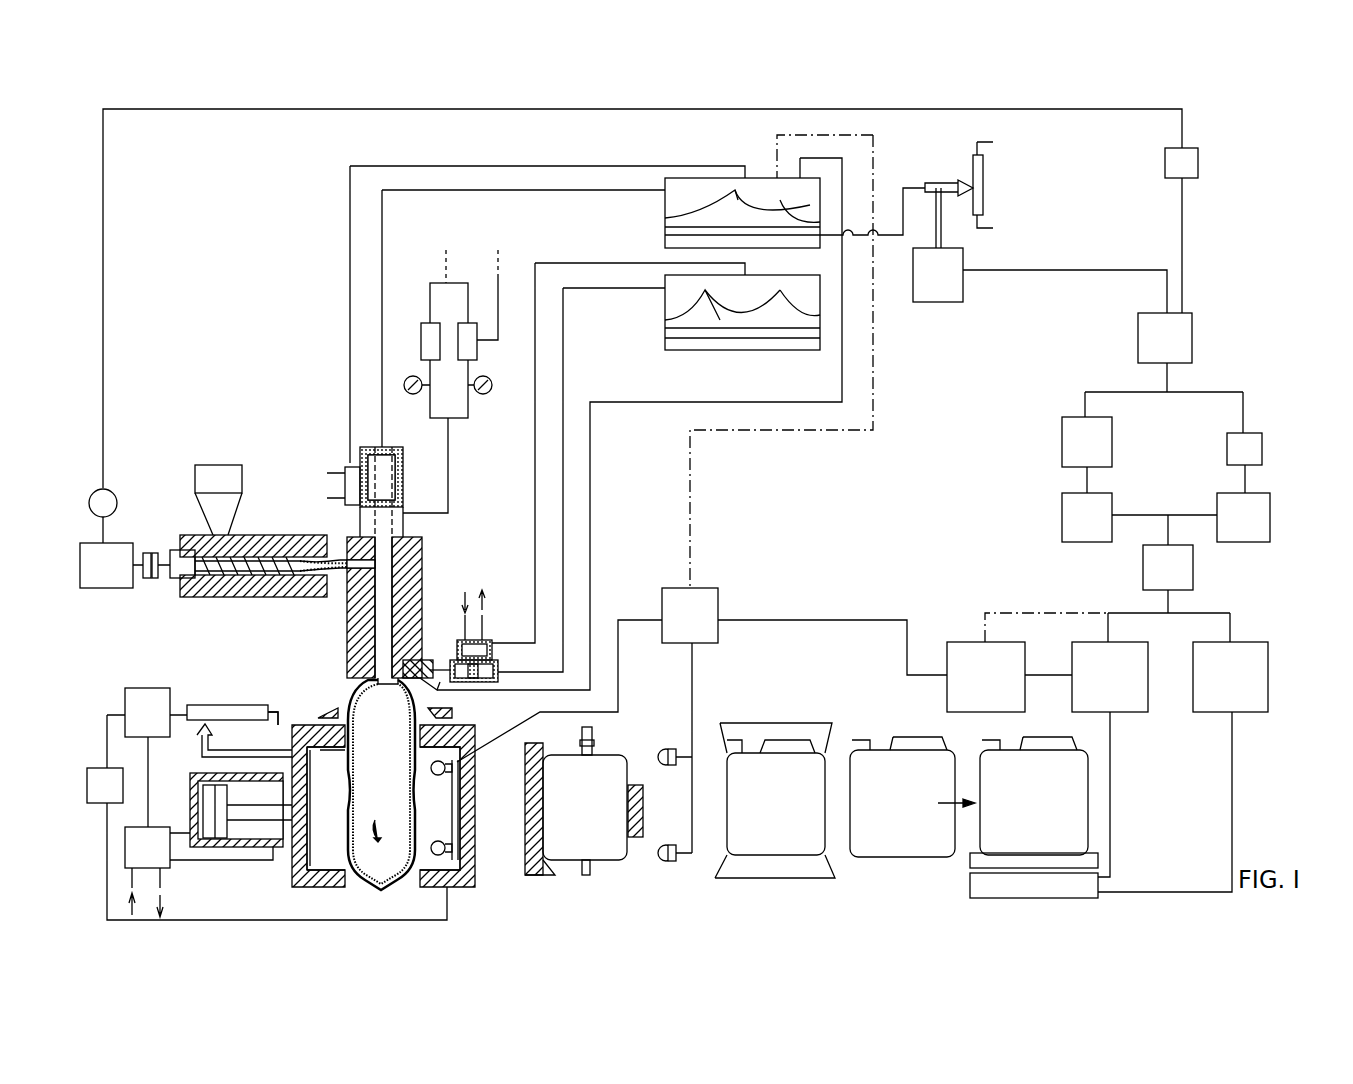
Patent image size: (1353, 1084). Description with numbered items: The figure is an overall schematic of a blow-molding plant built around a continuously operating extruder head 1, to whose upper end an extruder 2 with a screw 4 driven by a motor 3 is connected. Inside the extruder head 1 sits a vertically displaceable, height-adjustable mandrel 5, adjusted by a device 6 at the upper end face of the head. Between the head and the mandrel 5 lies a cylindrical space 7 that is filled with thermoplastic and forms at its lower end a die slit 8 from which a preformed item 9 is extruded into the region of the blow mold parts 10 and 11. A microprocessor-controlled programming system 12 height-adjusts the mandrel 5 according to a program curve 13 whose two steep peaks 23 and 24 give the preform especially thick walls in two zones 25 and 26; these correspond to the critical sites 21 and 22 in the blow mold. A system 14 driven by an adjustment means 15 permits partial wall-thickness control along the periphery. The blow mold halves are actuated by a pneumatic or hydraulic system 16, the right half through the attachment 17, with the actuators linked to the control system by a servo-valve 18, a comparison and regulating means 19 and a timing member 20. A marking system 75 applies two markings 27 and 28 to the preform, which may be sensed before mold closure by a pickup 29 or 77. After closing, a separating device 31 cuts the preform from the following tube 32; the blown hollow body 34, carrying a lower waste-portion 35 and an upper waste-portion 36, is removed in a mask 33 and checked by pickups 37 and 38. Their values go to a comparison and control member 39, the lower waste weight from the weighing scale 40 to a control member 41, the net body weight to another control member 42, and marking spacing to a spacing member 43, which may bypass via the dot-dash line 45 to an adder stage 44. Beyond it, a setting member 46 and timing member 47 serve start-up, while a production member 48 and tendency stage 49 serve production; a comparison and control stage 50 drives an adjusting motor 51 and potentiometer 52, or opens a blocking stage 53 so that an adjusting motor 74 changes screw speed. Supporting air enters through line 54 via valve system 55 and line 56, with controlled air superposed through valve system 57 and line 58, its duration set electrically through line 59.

The extruder head 1 is at (428, 551).
The extruder 2 is at (222, 598).
The motor 3 is at (92, 588).
The screw 4 is at (242, 530).
The mandrel 5 is at (385, 690).
The device 6 is at (403, 490).
The cylindrical space 7 is at (360, 618).
The die slit 8 is at (365, 668).
The preformed item 9 is at (358, 750).
The blow mold part 10 is at (325, 887).
The blow mold part 11 is at (462, 887).
The programming system 12 is at (665, 200).
The program curve 13 is at (745, 215).
The system 14 is at (425, 630).
The adjustment means 15 is at (492, 650).
The pneumatic or hydraulic system 16 is at (235, 847).
The attachment 17 is at (475, 800).
The servo-valve 18 is at (158, 827).
The comparison and regulating means 19 is at (142, 688).
The timing member 20 is at (92, 768).
The site 21 is at (318, 752).
The site 22 is at (318, 830).
The peak 23 is at (700, 178).
The peak 24 is at (778, 180).
The zone 25 is at (462, 712).
The zone 26 is at (423, 800).
The marking 27 is at (390, 770).
The marking 28 is at (1043, 845).
The pickup 29 is at (450, 770).
The separating device 31 is at (320, 705).
The tube 32 is at (348, 700).
The mask 33 is at (535, 875).
The hollow body 34 is at (562, 830).
The lower waste-portion 35 is at (587, 875).
The upper waste-portion 36 is at (605, 740).
The pickup 37 is at (668, 749).
The pickup 38 is at (668, 845).
The comparison and control member 39 is at (708, 595).
The weighing scale 40 is at (970, 888).
The control member 41 is at (1128, 712).
The control member 42 is at (1250, 712).
The spacing member 43 is at (960, 650).
The adder stage 44 is at (1143, 572).
The dot-dash line 45 is at (1025, 612).
The setting member 46 is at (1255, 530).
The timing member 47 is at (1227, 450).
The production member 48 is at (1062, 518).
The tendency stage 49 is at (1062, 440).
The comparison and control stage 50 is at (1138, 338).
The adjusting motor 51 is at (935, 300).
The potentiometer 52 is at (983, 205).
The blocking stage 53 is at (1165, 165).
The line 54 is at (448, 470).
The valve system 55 is at (421, 340).
The line 56 is at (430, 410).
The valve system 57 is at (477, 352).
The line 58 is at (468, 413).
The line 59 is at (498, 295).
The adjusting motor 74 is at (117, 497).
The marking system 75 is at (437, 690).
The pickup 77 is at (458, 870).